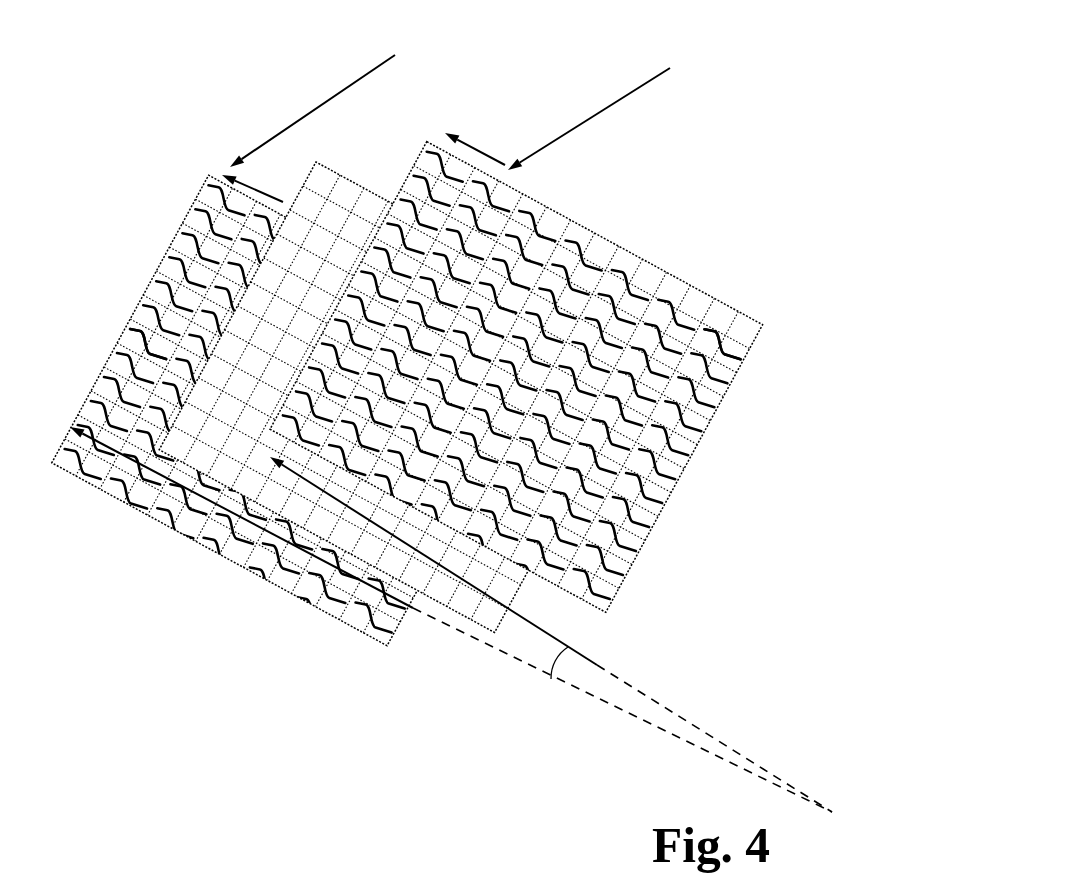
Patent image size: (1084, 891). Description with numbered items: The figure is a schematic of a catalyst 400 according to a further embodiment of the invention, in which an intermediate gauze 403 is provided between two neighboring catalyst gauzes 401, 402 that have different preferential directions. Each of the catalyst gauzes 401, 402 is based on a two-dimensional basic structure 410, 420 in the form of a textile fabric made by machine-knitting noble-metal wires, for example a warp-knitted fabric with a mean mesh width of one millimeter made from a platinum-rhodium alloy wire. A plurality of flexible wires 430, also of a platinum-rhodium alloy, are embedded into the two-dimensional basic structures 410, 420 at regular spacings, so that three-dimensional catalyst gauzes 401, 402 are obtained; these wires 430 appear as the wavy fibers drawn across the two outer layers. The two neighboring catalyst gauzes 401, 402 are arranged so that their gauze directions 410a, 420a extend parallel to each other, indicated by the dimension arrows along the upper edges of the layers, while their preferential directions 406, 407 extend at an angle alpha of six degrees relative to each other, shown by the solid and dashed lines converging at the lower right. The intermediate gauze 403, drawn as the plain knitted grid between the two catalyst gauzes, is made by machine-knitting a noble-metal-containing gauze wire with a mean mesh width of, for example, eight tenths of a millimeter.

The catalyst 400 is at (773, 86).
The catalyst gauze 401 is at (339, 94).
The catalyst gauze 402 is at (616, 98).
The intermediate gauze 403 is at (376, 159).
The preferential direction 406 is at (522, 660).
The preferential direction 407 is at (610, 673).
The two-dimensional basic structure 410 is at (180, 234).
The gauze direction 410a is at (248, 182).
The two-dimensional basic structure 420 is at (595, 233).
The third layer width 420a is at (472, 147).
The flexible wires 430 is at (123, 342).